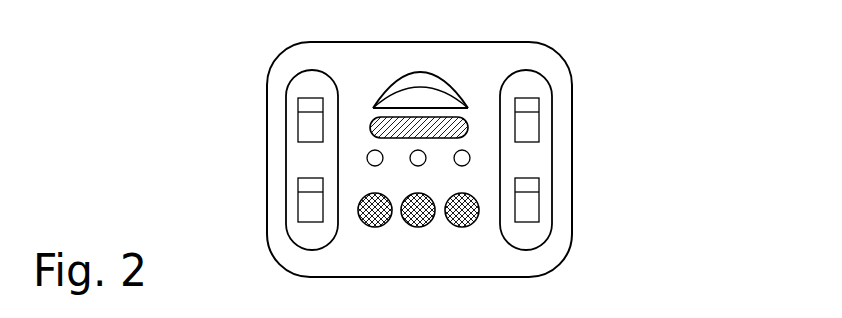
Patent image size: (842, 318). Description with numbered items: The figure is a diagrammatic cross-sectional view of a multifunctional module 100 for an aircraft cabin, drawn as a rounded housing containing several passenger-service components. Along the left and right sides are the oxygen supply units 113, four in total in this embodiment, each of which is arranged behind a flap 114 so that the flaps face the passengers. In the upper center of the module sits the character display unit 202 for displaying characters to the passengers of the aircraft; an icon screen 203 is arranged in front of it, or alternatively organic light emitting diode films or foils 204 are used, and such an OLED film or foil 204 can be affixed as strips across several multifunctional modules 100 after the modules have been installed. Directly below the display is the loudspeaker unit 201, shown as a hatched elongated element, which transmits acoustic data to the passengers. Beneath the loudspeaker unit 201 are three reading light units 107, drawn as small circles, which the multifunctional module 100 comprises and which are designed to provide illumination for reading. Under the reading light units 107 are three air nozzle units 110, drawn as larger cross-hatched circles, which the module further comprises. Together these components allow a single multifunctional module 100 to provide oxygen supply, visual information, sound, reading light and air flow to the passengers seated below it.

The multifunctional module 100 is at (656, 61).
The reading light unit 107 is at (503, 258).
The air nozzle unit 110 is at (460, 225).
The oxygen supply unit 113 is at (284, 138).
The flap 114 is at (306, 116).
The loudspeaker unit 201 is at (468, 117).
The character display unit 202 is at (401, 67).
The icon screen 203 is at (421, 87).
The OLED film or foil 204 is at (375, 100).